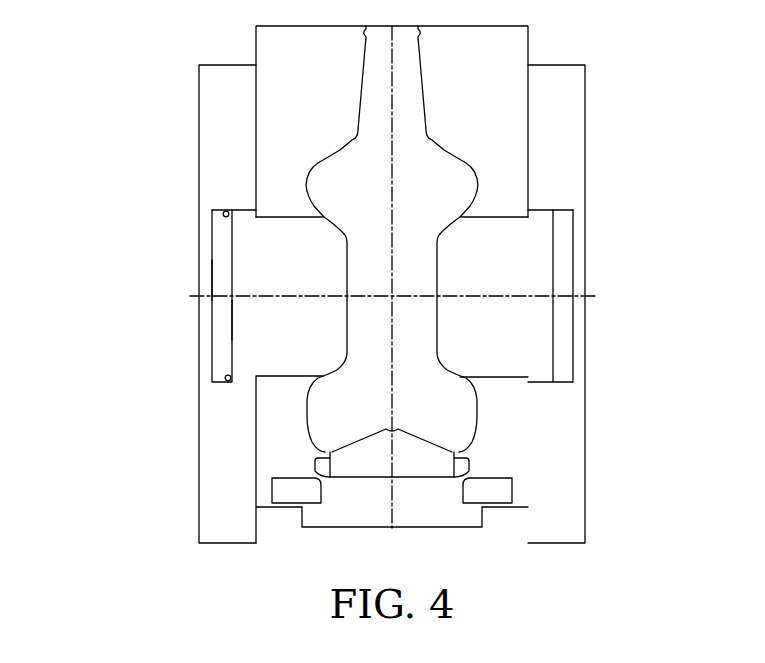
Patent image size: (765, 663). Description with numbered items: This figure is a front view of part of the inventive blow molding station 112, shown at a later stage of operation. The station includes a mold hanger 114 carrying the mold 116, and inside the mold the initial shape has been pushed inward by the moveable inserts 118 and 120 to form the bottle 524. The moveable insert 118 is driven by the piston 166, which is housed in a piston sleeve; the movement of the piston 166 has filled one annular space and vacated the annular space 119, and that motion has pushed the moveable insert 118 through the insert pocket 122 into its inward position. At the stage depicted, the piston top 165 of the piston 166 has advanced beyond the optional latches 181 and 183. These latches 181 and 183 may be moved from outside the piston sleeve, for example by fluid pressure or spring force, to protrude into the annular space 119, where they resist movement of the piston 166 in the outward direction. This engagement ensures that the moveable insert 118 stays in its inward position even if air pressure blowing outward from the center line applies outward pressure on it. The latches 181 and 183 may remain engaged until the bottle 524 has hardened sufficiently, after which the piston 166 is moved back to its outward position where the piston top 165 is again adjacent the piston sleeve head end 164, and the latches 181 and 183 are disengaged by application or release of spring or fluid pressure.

The blow molding station 112 is at (605, 118).
The mold hanger 114 is at (199, 472).
The mold 116 is at (255, 45).
The moveable insert 118 is at (292, 376).
The annular space 119 is at (212, 240).
The moveable insert 120 is at (505, 373).
The insert pocket 122 is at (283, 213).
The piston sleeve head end 164 is at (213, 288).
The piston top 165 is at (232, 320).
The piston 166 is at (241, 210).
The latch 181 is at (224, 377).
The latch 183 is at (222, 212).
The bottle 524 is at (445, 148).